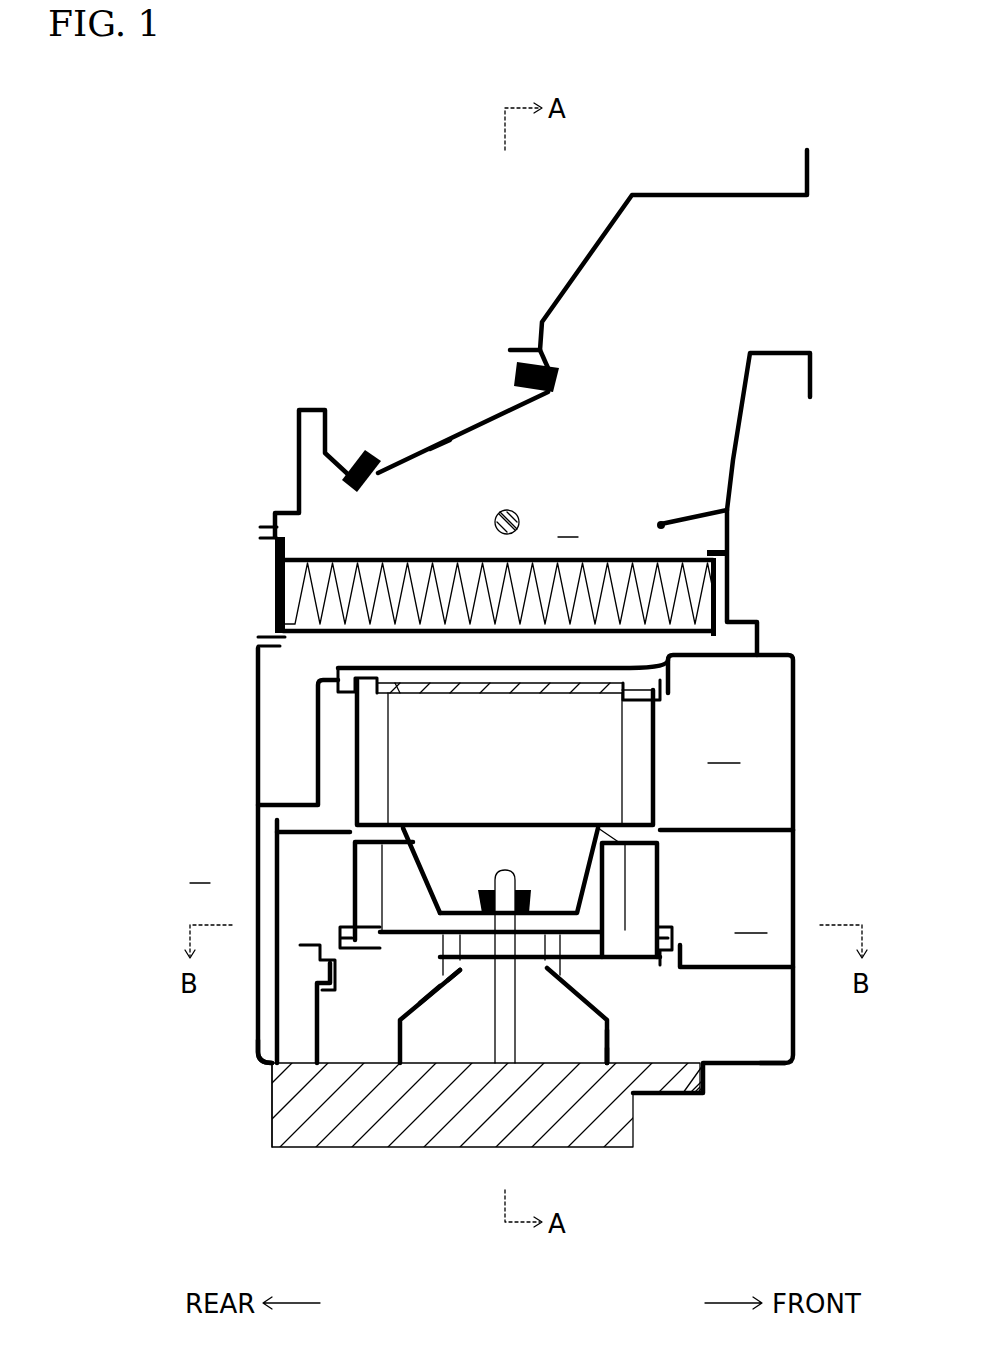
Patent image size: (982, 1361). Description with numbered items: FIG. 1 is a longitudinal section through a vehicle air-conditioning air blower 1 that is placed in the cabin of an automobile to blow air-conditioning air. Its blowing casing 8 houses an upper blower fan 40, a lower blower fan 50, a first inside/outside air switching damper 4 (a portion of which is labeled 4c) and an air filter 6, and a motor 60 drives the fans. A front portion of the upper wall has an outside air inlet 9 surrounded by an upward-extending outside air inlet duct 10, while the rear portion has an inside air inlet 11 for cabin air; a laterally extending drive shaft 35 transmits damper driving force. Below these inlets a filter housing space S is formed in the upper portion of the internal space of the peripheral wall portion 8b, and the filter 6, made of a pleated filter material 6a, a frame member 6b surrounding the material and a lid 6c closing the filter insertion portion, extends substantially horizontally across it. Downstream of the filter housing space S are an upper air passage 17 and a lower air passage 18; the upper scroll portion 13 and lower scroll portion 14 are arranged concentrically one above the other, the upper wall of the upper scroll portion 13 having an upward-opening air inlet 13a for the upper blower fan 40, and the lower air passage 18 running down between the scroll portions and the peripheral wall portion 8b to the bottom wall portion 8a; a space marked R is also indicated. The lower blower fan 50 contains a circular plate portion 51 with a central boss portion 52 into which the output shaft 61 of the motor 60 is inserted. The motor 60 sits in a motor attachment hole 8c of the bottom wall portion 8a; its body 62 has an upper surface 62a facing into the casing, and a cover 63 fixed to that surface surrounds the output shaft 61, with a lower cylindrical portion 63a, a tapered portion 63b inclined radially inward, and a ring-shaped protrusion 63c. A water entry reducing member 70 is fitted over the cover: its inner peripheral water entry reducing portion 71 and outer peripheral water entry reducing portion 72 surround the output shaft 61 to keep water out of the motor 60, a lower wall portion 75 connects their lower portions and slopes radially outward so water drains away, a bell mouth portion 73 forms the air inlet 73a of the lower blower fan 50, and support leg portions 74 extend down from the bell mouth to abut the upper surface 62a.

The vehicle air-conditioning air blower 1 is at (403, 242).
The outside air inlet duct 10 is at (734, 190).
The first inside/outside air switching damper 4 is at (472, 410).
The edge portion of lid plate 4c is at (432, 450).
The inside air inlet 11 is at (332, 408).
The air filter 6 is at (270, 572).
The pleated filter material 6a is at (690, 580).
The frame member 6b is at (730, 567).
The lid 6c is at (275, 612).
The outside air inlet 9 is at (667, 522).
The drive shaft 35 is at (508, 510).
The filter housing space S is at (568, 523).
The rear space R is at (200, 869).
The blowing casing 8 is at (252, 715).
The bottom wall portion 8a is at (728, 1065).
The peripheral wall portion 8b is at (300, 1000).
The motor attachment hole 8c is at (697, 1088).
The upper scroll portion 13 is at (313, 695).
The air inlet 13a is at (390, 680).
The upper air passage 17 is at (730, 742).
The lower air passage 18 is at (726, 898).
The upper blower fan 40 is at (350, 756).
The lower scroll portion 14 is at (273, 880).
The lower blower fan 50 is at (348, 870).
The circular plate portion 51 is at (422, 872).
The boss portion 52 is at (485, 912).
The lower wall portion 75 is at (520, 955).
The inner peripheral water entry reducing portion 71 is at (525, 912).
The water entry reducing member 70 is at (592, 930).
The outer peripheral water entry reducing portion 72 is at (440, 938).
The bell mouth portion 73 is at (650, 948).
The air inlet 73a is at (372, 940).
The cover 63 is at (592, 996).
The cylindrical portion 63a is at (610, 1050).
The tapered portion 63b is at (422, 998).
The protrusion 63c is at (456, 978).
The output shaft 61 is at (610, 1032).
The body 62 is at (392, 1150).
The upper surface 62a is at (373, 1062).
The support leg portions 74 is at (315, 1022).
The motor 60 is at (268, 1100).